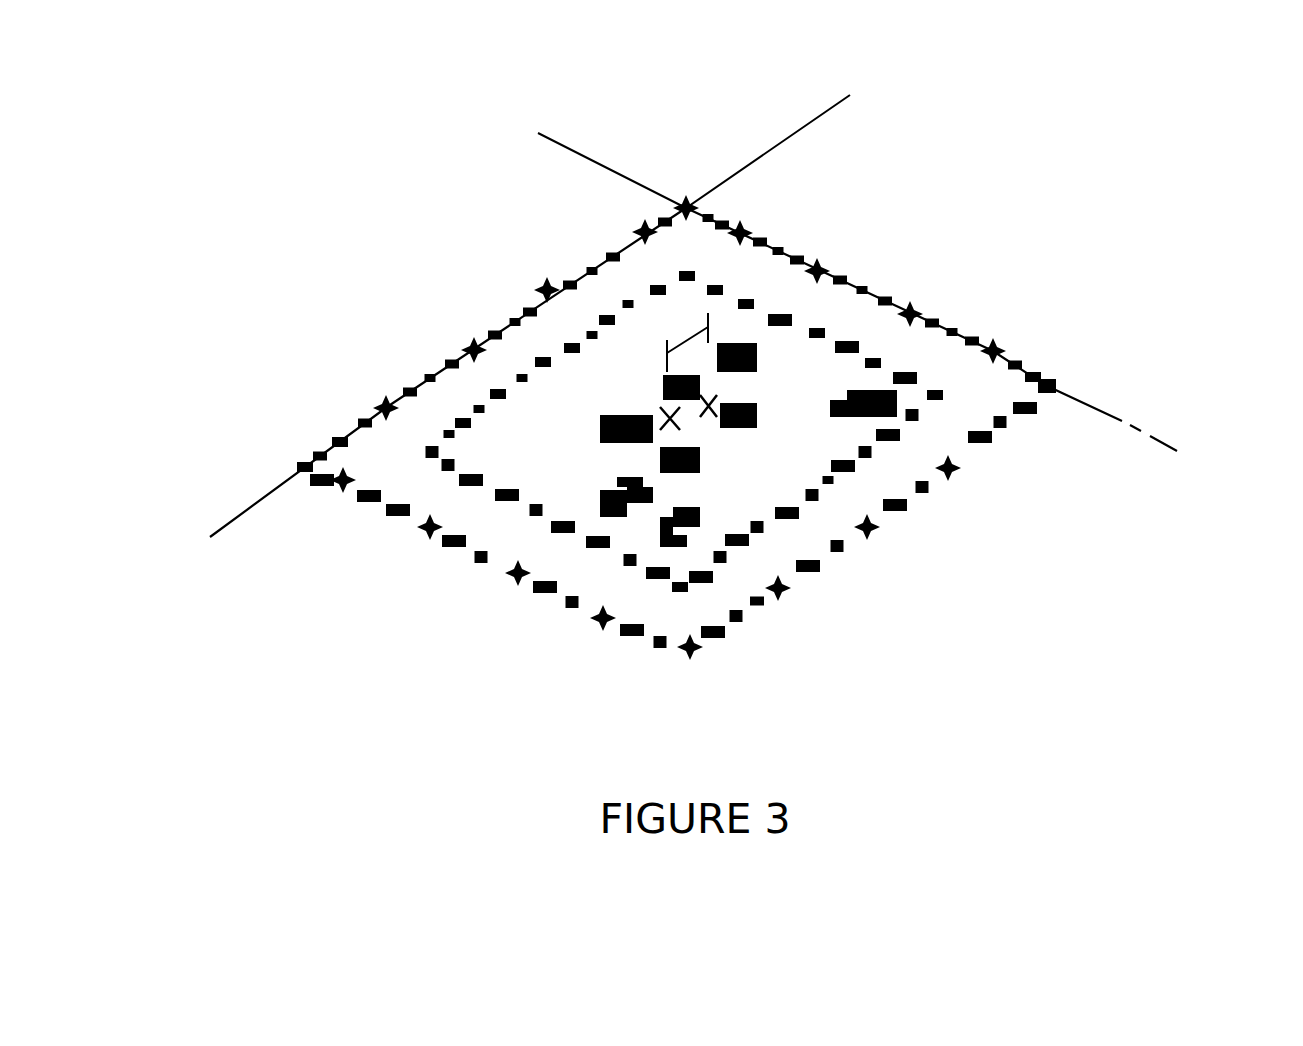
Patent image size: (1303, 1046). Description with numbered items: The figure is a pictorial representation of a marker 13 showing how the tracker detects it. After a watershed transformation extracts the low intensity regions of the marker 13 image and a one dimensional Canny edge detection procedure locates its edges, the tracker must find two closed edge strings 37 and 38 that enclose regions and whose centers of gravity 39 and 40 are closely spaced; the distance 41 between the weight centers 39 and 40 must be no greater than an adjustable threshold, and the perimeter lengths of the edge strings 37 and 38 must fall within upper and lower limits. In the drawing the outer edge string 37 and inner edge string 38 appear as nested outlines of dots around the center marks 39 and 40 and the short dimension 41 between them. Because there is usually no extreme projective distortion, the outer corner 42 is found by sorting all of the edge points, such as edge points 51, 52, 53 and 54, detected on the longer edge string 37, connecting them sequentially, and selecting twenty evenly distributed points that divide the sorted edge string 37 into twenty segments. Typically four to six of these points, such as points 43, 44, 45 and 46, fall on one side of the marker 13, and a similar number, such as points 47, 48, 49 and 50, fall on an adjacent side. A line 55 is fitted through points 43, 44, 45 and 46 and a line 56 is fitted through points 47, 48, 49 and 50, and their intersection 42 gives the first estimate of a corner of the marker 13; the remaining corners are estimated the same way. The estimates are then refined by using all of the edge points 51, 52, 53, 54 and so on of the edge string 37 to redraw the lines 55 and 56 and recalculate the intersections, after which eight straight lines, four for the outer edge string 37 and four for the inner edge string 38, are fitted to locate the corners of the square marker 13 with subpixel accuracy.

The marker 13 is at (353, 266).
The outer edge string 37 is at (443, 543).
The inner edge string 38 is at (592, 543).
The center of gravity 39 is at (667, 413).
The center of gravity 40 is at (717, 400).
The distance 41 is at (683, 340).
The outer corner 42 is at (688, 207).
The edge point 43 is at (385, 408).
The edge point 44 is at (473, 347).
The edge point 45 is at (547, 290).
The edge point 46 is at (643, 230).
The edge point 47 is at (740, 230).
The edge point 48 is at (817, 273).
The edge point 49 is at (910, 317).
The edge point 50 is at (995, 348).
The edge point 51 is at (723, 637).
The edge point 52 is at (737, 617).
The edge point 53 is at (753, 603).
The edge point 54 is at (788, 587).
The line 55 is at (237, 510).
The line 56 is at (1120, 420).